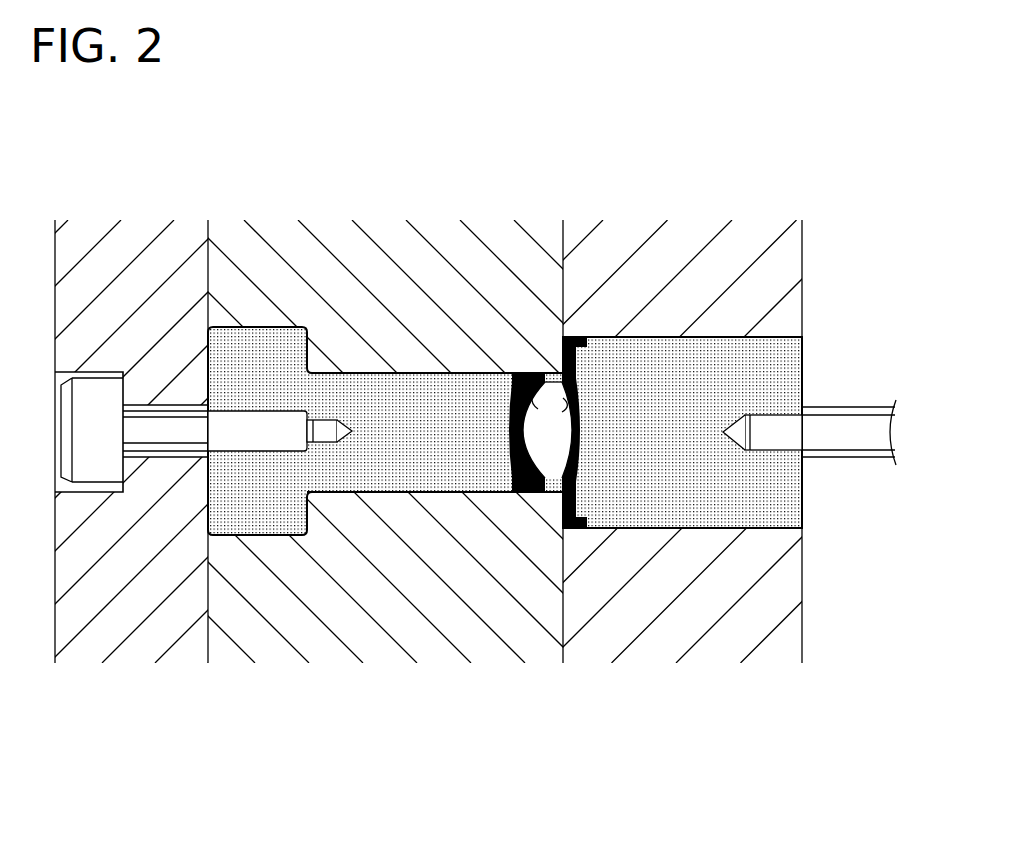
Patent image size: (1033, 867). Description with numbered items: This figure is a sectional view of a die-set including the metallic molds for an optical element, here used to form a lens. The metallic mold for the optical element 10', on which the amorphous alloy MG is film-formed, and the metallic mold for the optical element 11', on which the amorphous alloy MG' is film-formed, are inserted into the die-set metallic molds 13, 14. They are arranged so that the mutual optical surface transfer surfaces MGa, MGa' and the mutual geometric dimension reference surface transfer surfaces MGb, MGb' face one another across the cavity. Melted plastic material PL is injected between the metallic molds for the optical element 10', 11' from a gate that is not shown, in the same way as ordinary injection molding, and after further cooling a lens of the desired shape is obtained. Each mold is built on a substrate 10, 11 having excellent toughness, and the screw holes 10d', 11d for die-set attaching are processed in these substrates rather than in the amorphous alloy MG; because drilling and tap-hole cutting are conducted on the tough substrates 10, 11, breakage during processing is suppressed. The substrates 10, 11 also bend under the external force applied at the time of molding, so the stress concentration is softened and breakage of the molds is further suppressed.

The substrate 10 is at (385, 524).
The metallic mold for the optical element 10' is at (418, 607).
The screw hole 10d' is at (280, 298).
The substrate 11 is at (682, 527).
The metallic mold for the optical element 11' is at (682, 638).
The screw hole 11d is at (788, 417).
The die-set metallic mold 13 is at (359, 592).
The die-set metallic mold 14 is at (648, 592).
The amorphous alloy MG is at (476, 331).
The amorphous alloy MG' is at (620, 342).
The optical surface transfer surface MGa is at (504, 282).
The geometric dimension reference surface transfer surface MGb is at (518, 586).
The optical surface transfer surface MGa' is at (602, 277).
The geometric dimension reference surface transfer surface MGb' is at (580, 576).
The melted plastic material PL is at (553, 383).